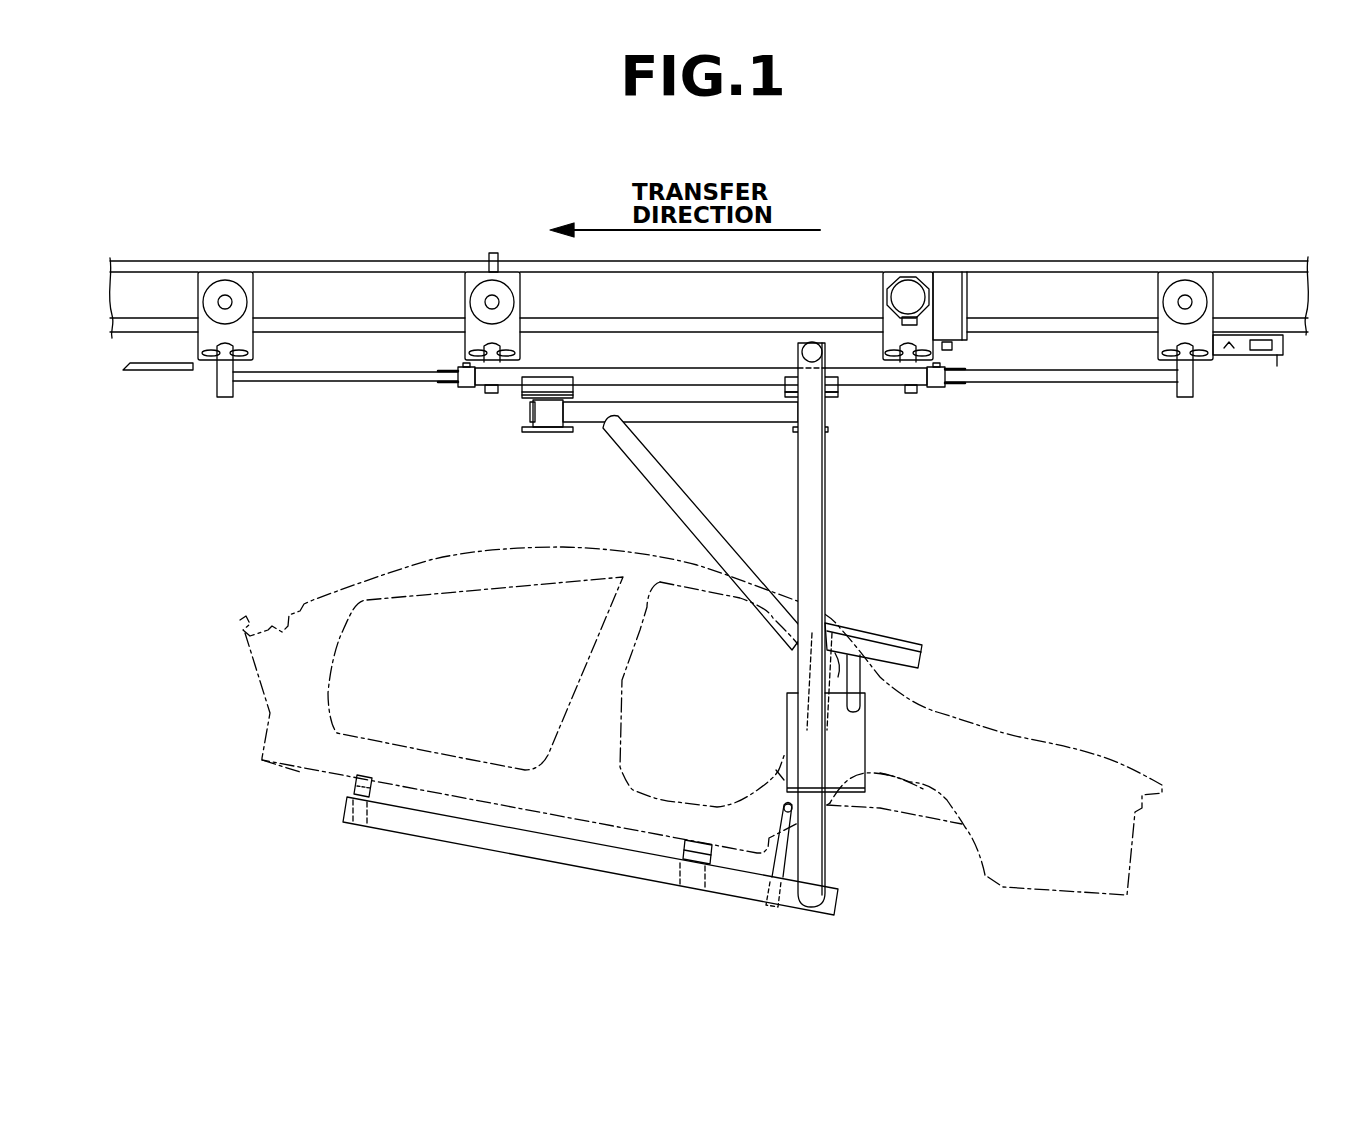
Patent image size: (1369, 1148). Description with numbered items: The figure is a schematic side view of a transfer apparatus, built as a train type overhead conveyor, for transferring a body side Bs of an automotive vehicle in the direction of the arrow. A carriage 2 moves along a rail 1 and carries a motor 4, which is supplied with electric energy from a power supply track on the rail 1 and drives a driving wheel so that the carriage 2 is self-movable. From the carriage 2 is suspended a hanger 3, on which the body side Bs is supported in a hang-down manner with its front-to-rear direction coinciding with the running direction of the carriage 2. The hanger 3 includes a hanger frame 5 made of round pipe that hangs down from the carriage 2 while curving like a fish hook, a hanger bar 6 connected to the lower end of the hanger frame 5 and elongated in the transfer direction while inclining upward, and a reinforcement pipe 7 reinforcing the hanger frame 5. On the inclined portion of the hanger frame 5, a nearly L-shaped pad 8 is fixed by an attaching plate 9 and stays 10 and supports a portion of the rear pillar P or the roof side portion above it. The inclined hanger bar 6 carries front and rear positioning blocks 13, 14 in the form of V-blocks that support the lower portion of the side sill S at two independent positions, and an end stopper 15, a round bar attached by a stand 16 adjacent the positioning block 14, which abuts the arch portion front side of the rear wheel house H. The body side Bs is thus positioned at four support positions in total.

The rail 1 is at (1050, 250).
The carriage 2 is at (870, 395).
The hanger 3 is at (835, 541).
The motor 4 is at (907, 276).
The hanger frame 5 is at (818, 483).
The hanger bar 6 is at (512, 855).
The reinforcement pipe 7 is at (650, 470).
The pad 8 is at (915, 628).
The attaching plate 9 is at (865, 747).
The stays 10 is at (855, 678).
The front positioning block 13 is at (347, 780).
The rear positioning block 14 is at (685, 843).
The end stopper 15 is at (788, 807).
The stand 16 is at (790, 847).
The rear pillar P is at (780, 778).
The side sill S is at (300, 775).
The rear wheel house H is at (910, 782).
The body side Bs is at (418, 548).